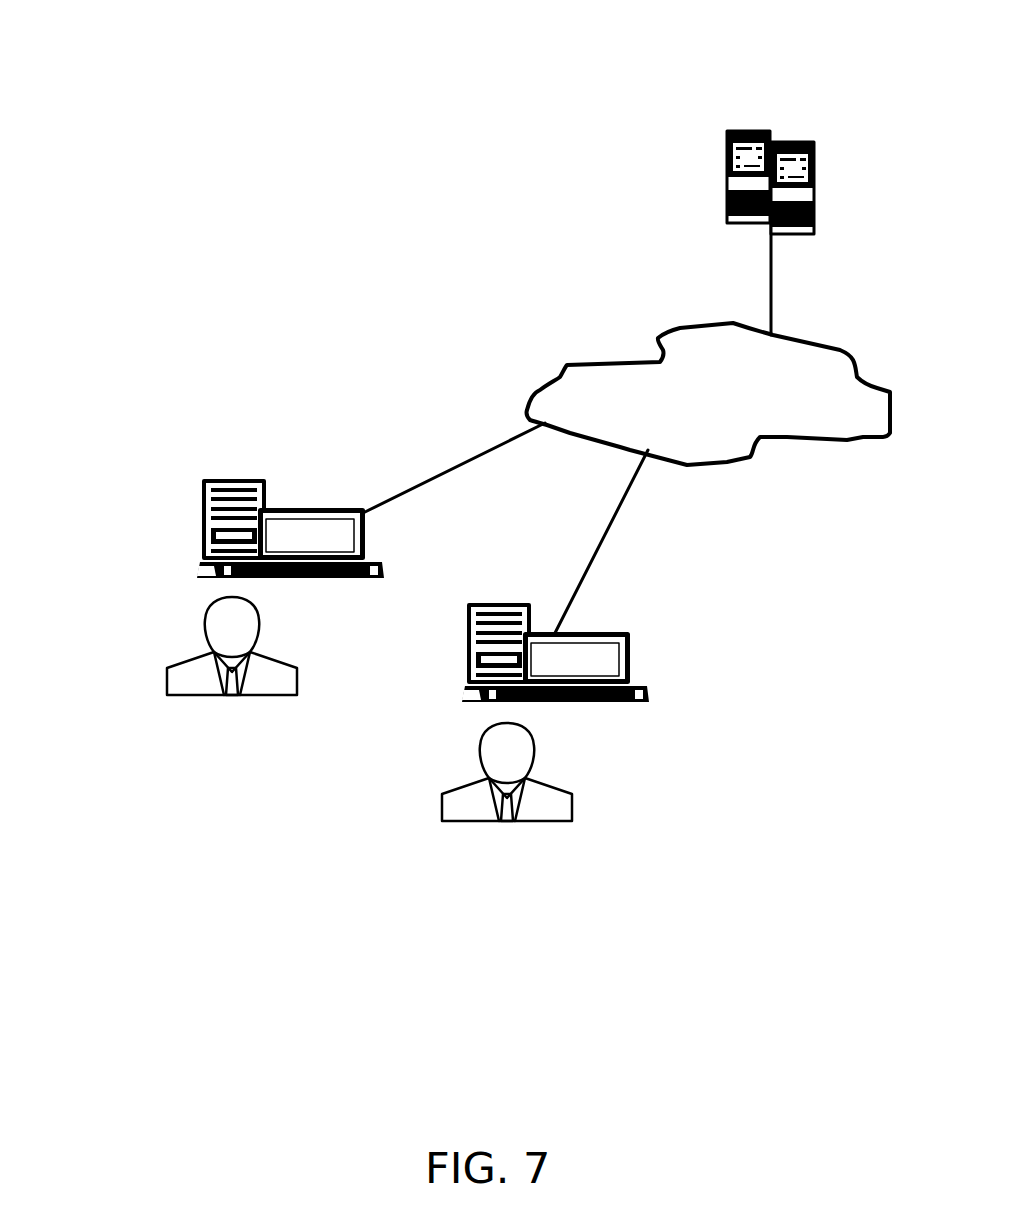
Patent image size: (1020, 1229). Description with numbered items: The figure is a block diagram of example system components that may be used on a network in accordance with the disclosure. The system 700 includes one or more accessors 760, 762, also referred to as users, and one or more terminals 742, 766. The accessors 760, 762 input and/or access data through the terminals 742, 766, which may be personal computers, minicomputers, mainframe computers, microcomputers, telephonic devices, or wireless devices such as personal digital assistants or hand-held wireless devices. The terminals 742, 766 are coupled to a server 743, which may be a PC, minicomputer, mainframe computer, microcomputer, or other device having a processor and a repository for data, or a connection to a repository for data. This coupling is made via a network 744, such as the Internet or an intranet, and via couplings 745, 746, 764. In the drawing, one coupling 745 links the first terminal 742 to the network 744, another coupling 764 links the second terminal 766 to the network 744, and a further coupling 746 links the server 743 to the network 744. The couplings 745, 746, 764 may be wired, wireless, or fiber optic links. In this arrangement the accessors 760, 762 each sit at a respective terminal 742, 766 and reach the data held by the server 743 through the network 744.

The system 700 is at (182, 99).
The terminal 742 is at (203, 480).
The server 743 is at (808, 142).
The network 744 is at (660, 345).
The coupling 745 is at (446, 471).
The coupling 746 is at (770, 273).
The accessor 760 is at (190, 657).
The accessor 762 is at (574, 795).
The coupling 764 is at (607, 532).
The terminal 766 is at (632, 660).